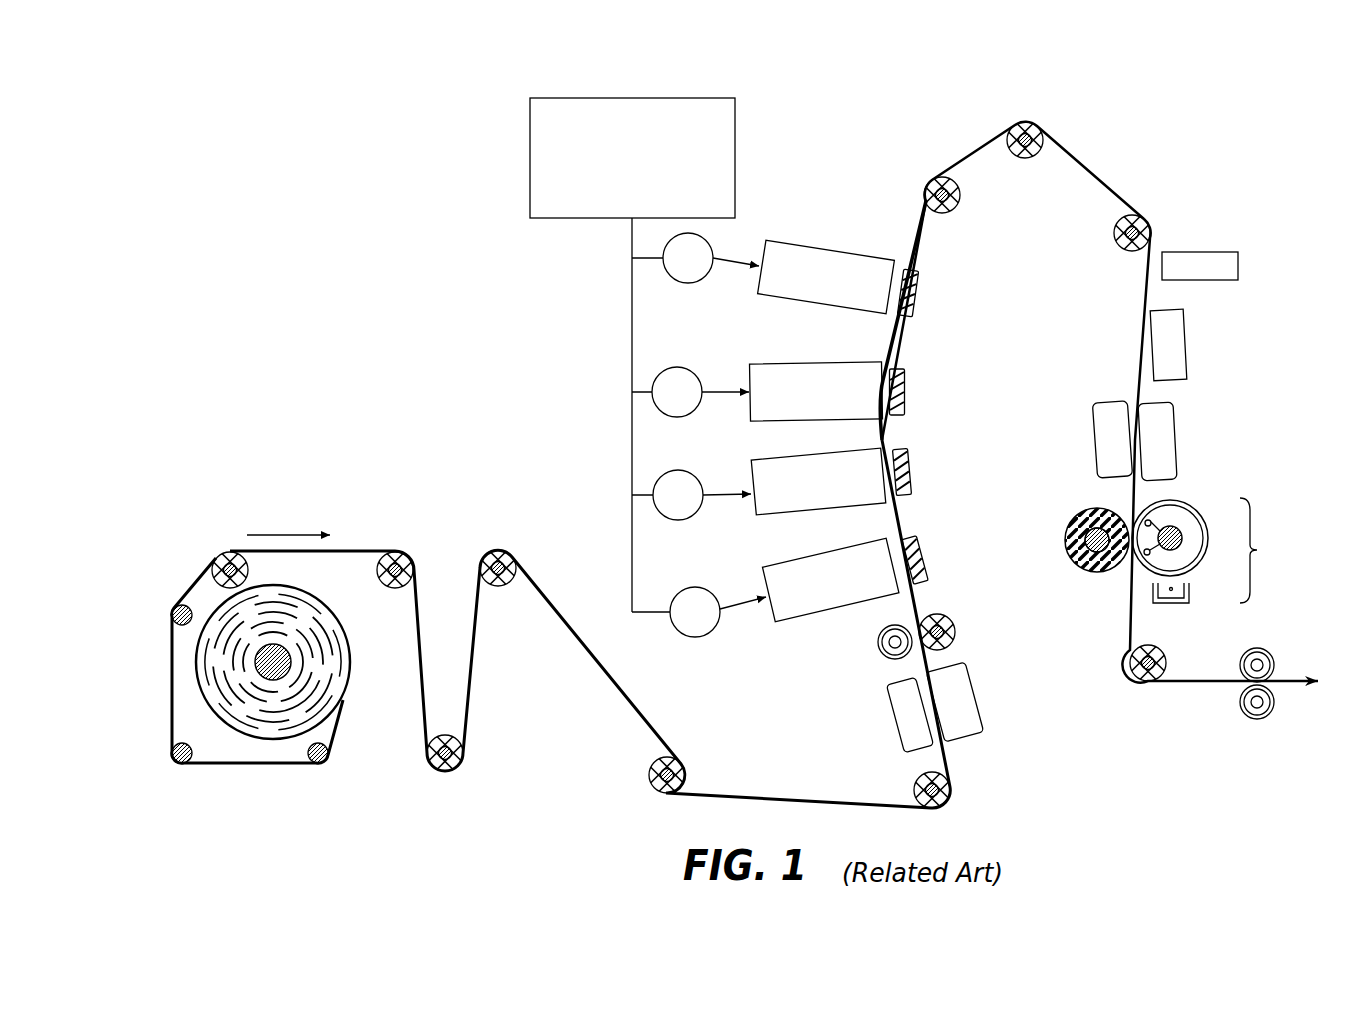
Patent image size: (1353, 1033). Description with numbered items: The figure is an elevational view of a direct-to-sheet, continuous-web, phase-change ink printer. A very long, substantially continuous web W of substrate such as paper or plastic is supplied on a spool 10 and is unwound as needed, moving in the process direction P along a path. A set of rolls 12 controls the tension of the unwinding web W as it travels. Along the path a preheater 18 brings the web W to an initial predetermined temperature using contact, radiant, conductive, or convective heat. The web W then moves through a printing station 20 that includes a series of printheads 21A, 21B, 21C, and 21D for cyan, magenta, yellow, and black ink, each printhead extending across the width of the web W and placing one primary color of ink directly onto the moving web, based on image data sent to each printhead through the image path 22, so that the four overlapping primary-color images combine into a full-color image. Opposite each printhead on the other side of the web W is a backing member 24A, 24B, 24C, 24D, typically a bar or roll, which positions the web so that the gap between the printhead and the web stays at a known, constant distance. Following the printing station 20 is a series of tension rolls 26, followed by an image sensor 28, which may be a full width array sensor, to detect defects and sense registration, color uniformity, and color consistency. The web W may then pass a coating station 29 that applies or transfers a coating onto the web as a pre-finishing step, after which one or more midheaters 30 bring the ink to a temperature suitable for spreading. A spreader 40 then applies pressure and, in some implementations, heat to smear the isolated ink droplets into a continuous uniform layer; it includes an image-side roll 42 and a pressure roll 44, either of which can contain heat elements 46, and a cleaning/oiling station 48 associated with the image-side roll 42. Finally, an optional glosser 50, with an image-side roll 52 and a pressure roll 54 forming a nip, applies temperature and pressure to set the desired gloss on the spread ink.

The spool 10 is at (292, 598).
The rolls 12 is at (490, 562).
The preheater 18 is at (980, 730).
The printing station 20 is at (696, 278).
The printhead (C) 21A is at (830, 580).
The printhead (M) 21B is at (818, 481).
The printhead (Y) 21C is at (816, 391).
The printhead (K) 21D is at (826, 276).
The image path 22 is at (595, 97).
The backing member 24A is at (920, 547).
The backing member 24B is at (910, 457).
The backing member 24C is at (906, 368).
The backing member 24D is at (916, 310).
The tension rolls 26 is at (1040, 145).
The image sensor 28 is at (1238, 262).
The coating station 29 is at (1178, 328).
The midheater 30 is at (1102, 440).
The spreader 40 is at (1297, 566).
The image-side roll 42 is at (1207, 553).
The pressure roll 44 is at (1075, 547).
The heat elements 46 is at (1151, 523).
The cleaning/oiling station 48 is at (1172, 604).
The glosser 50 is at (1266, 636).
The image-side roll 52 is at (1242, 670).
The pressure roll 54 is at (1266, 713).
The web process direction P is at (298, 533).
The web W is at (802, 795).